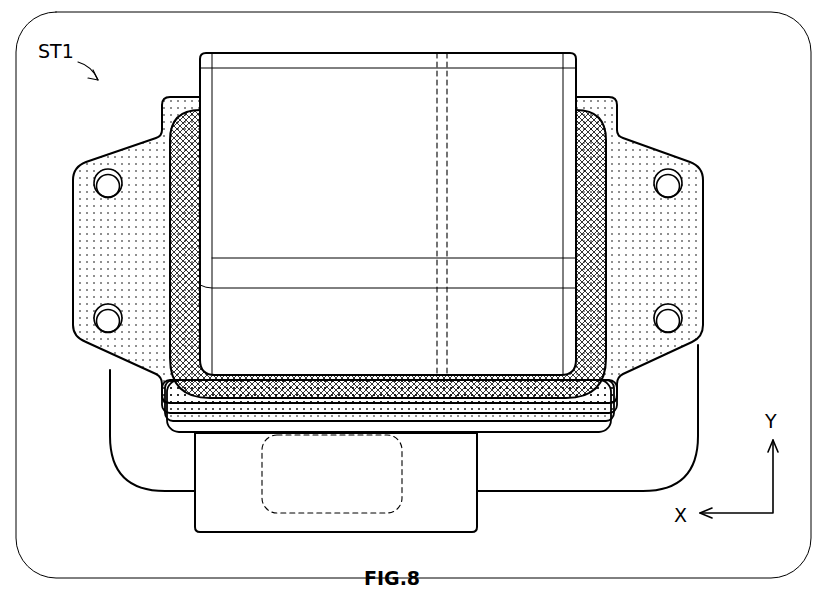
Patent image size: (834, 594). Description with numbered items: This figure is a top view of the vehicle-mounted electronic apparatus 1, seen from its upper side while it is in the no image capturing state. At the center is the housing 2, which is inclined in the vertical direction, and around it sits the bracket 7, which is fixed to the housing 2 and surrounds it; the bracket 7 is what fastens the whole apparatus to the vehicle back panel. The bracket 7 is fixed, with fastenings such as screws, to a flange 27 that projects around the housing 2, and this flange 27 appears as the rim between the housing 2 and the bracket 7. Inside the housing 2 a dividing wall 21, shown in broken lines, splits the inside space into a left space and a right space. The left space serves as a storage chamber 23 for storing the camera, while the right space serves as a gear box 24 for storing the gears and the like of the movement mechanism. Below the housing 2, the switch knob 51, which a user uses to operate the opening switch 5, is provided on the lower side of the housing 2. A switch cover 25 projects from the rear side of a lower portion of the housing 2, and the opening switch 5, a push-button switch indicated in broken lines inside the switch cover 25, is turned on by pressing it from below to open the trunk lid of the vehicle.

The vehicle-mounted electronic apparatus 1 is at (648, 98).
The housing 2 is at (409, 197).
The opening switch 5 is at (405, 478).
The bracket 7 is at (92, 240).
The dividing wall 21 is at (437, 197).
The storage chamber 23 is at (329, 85).
The gear box 24 is at (511, 85).
The switch cover 25 is at (478, 513).
The flange 27 is at (367, 270).
The switch knob 51 is at (683, 389).